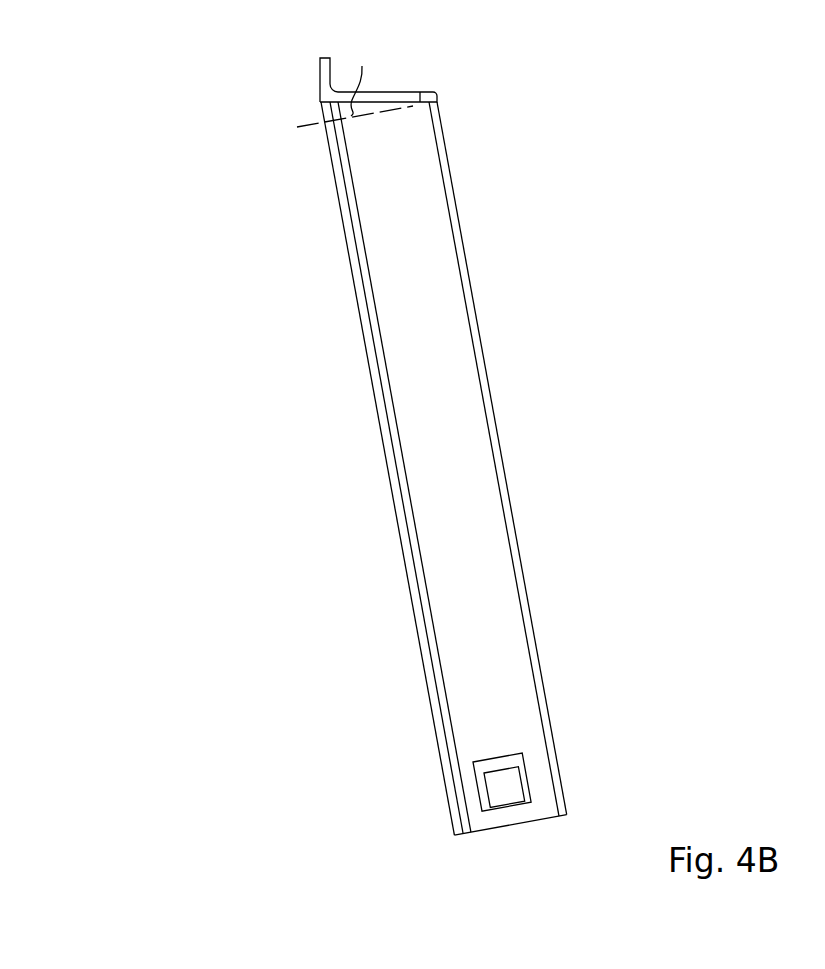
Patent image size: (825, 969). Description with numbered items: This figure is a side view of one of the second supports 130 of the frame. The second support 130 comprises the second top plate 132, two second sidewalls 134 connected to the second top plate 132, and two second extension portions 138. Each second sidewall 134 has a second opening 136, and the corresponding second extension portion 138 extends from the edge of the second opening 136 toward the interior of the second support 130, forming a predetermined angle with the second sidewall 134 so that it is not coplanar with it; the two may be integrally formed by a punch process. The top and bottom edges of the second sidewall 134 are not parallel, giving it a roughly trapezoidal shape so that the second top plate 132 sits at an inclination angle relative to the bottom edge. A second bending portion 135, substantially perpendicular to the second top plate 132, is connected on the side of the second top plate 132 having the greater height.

The second support 130 is at (280, 65).
The second top plate 132 is at (393, 96).
The second sidewall 134 is at (422, 372).
The second bending portion 135 is at (318, 72).
The second opening 136 is at (521, 761).
The second extension portion 138 is at (500, 790).